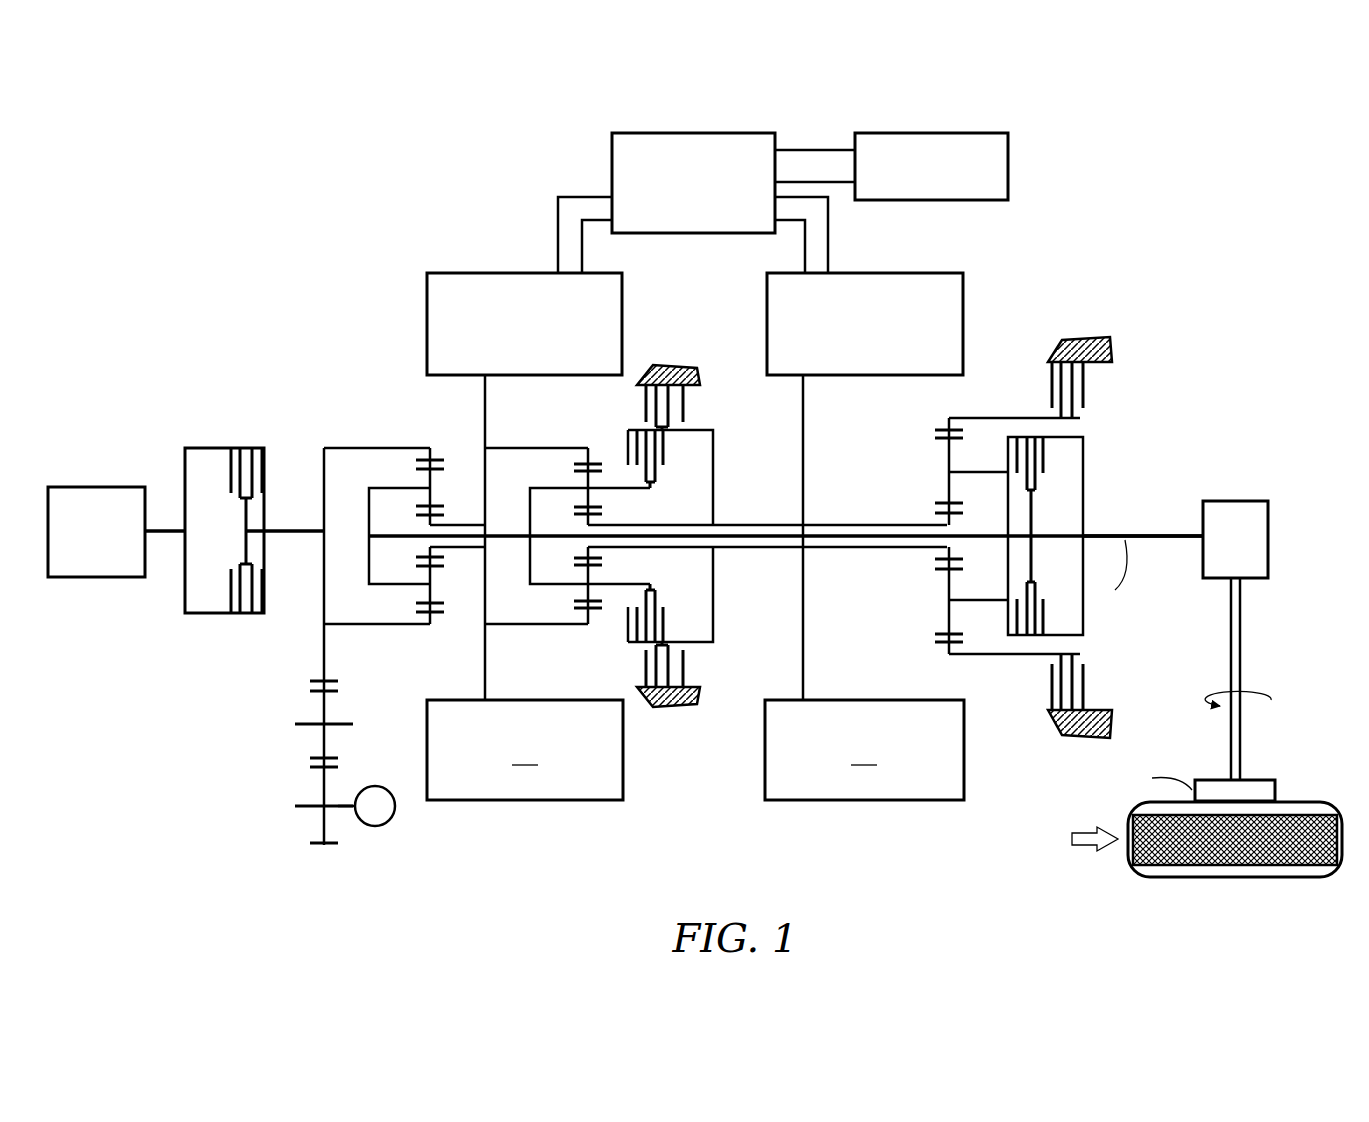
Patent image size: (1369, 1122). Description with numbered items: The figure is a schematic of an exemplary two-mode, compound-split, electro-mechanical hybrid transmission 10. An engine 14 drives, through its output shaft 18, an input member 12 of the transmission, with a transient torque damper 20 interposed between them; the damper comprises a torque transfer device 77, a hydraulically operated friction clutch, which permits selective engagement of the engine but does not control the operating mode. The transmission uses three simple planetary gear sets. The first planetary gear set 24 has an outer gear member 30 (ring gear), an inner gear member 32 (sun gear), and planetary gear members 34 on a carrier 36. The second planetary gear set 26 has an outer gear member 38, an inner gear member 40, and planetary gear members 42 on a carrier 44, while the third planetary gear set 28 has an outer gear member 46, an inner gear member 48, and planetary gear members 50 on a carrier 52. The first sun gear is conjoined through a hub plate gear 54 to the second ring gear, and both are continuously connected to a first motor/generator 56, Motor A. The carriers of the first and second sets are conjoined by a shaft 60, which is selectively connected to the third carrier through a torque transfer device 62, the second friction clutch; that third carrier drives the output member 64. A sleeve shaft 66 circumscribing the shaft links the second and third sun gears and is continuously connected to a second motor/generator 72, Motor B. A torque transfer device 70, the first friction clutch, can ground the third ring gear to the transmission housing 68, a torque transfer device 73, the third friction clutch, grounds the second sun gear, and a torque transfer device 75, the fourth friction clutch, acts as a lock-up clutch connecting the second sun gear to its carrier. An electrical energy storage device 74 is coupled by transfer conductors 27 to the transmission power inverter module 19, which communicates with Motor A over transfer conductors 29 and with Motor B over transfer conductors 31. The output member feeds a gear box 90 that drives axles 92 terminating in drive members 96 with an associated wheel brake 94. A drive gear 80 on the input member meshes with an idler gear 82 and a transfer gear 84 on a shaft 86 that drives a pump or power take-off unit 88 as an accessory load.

The hybrid transmission 10 is at (385, 237).
The input member 12 is at (300, 531).
The engine 14 is at (103, 487).
The output shaft 18 is at (166, 530).
The transmission power inverter module 19 is at (612, 150).
The transient torque damper 20 is at (224, 498).
The first planetary gear set 24 is at (404, 523).
The second planetary gear set 26 is at (599, 532).
The transfer conductors 27 is at (815, 150).
The third planetary gear set 28 is at (967, 516).
The transfer conductors 29 is at (558, 235).
The outer gear member 30 is at (434, 460).
The transfer conductors 31 is at (828, 228).
The inner gear member 32 is at (437, 524).
The planetary gear members 34 is at (424, 484).
The carrier 36 is at (368, 548).
The outer gear member 38 is at (592, 462).
The inner gear member 40 is at (598, 524).
The planetary gear members 42 is at (585, 478).
The carrier 44 is at (527, 583).
The outer gear member 46 is at (935, 436).
The inner gear member 48 is at (935, 512).
The planetary gear members 50 is at (947, 448).
The carrier 52 is at (1083, 526).
The hub plate gear 54 is at (487, 502).
The first motor/generator 56 is at (427, 308).
The shaft 60 is at (778, 536).
The torque transfer device 62 is at (1052, 478).
The output member 64 is at (1175, 535).
The sleeve shaft 66 is at (750, 525).
The transmission housing 68 is at (662, 365).
The torque transfer device 70 is at (1043, 387).
The second motor/generator 72 is at (963, 293).
The torque transfer device 73 is at (686, 405).
The electrical energy storage device 74 is at (1008, 155).
The torque transfer device 75 is at (664, 466).
The torque transfer device 77 is at (232, 484).
The drive gear 80 is at (322, 583).
The idler gear 82 is at (316, 720).
The transfer gear 84 is at (318, 826).
The shaft 86 is at (340, 808).
The hydraulic/transmission fluid pump and/or power take-off unit 88 is at (386, 826).
The gear box 90 is at (1200, 565).
The axles 92 is at (1242, 655).
The wheel brake 94 is at (1276, 790).
The drive members 96 is at (1155, 872).